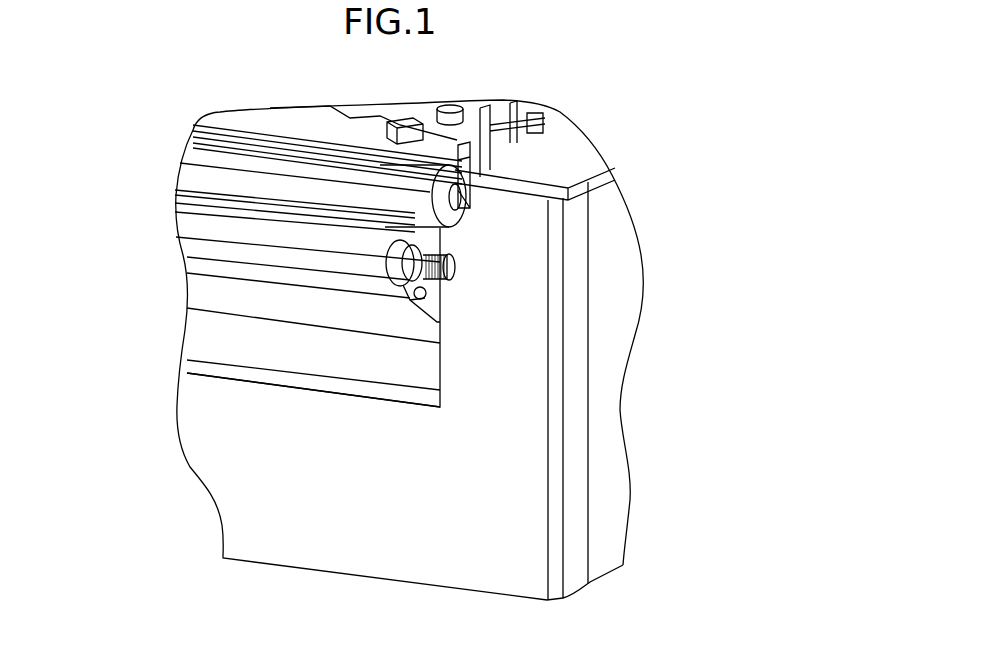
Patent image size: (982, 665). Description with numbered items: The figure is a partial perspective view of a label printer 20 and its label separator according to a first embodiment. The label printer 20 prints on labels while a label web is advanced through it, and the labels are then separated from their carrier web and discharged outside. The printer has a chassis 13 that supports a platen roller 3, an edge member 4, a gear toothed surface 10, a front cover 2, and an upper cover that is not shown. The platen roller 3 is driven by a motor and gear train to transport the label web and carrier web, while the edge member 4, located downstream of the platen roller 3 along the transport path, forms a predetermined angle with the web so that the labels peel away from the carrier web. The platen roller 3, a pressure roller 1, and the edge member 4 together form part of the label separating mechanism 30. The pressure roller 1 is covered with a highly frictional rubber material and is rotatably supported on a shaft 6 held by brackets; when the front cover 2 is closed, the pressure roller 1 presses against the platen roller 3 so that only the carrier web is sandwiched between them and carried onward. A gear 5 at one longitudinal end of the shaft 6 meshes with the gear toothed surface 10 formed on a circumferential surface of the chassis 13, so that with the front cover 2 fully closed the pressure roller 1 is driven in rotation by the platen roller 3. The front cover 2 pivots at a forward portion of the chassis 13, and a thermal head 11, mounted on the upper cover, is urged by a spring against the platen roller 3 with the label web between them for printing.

The label printer 20 is at (652, 122).
The label separating mechanism 30 is at (165, 229).
The pressure roller 1 is at (200, 247).
The front cover 2 is at (200, 295).
The platen roller 3 is at (200, 163).
The edge member 4 is at (343, 148).
The gear 5 is at (455, 267).
The shaft 6 is at (390, 235).
The gear toothed surface 10 is at (453, 248).
The thermal head 11 is at (443, 150).
The chassis 13 is at (607, 500).